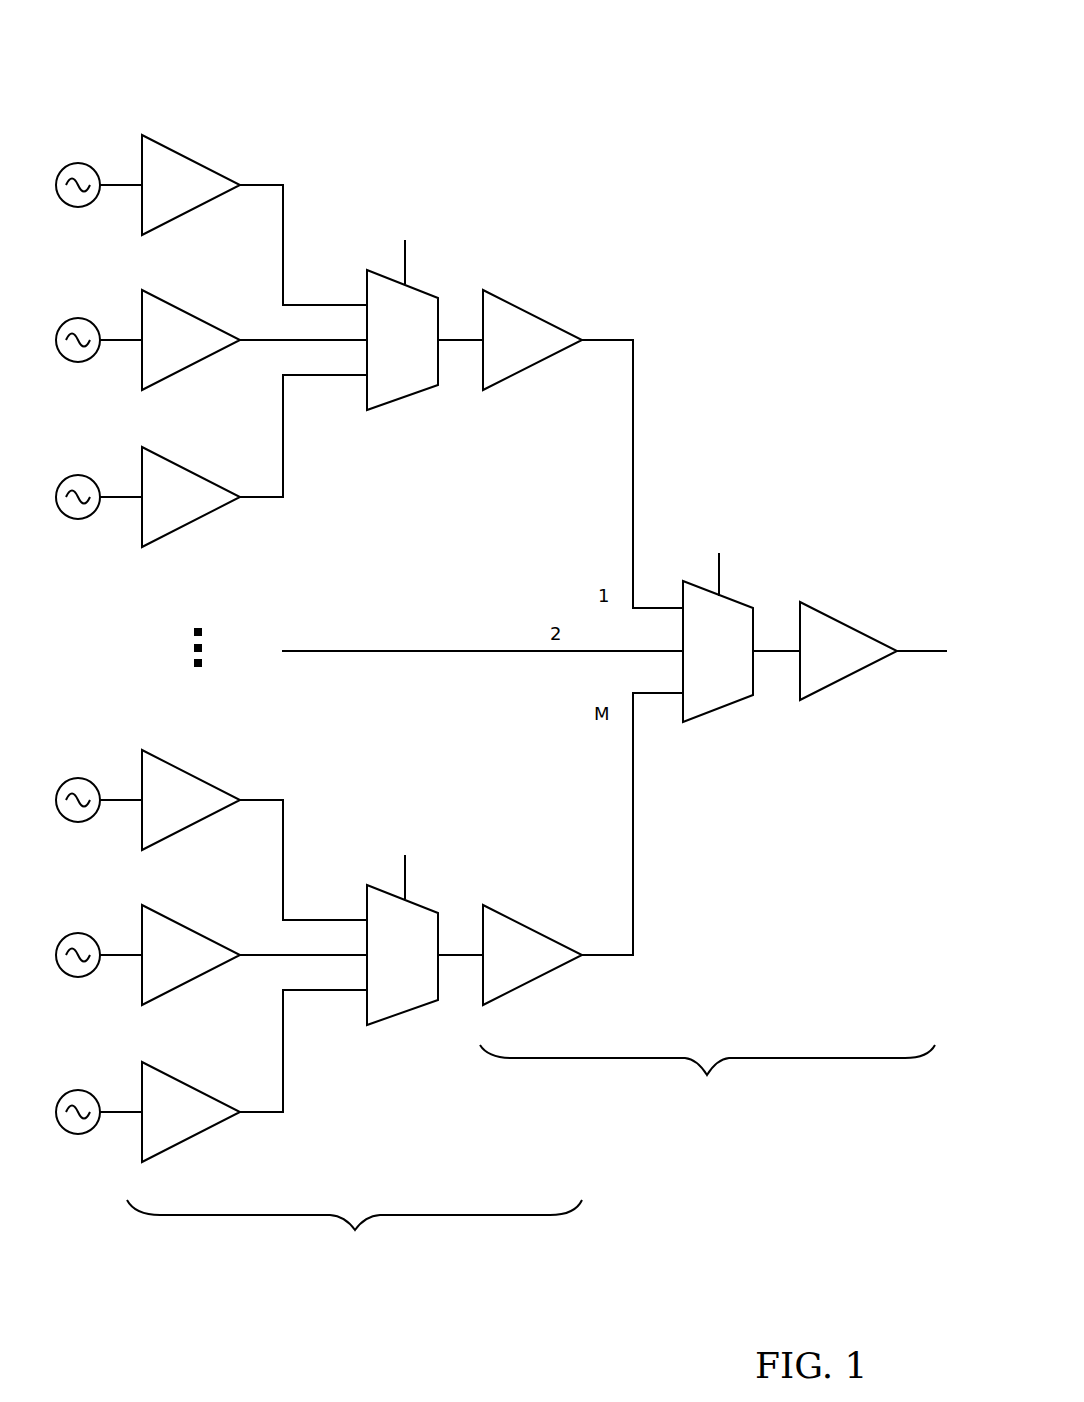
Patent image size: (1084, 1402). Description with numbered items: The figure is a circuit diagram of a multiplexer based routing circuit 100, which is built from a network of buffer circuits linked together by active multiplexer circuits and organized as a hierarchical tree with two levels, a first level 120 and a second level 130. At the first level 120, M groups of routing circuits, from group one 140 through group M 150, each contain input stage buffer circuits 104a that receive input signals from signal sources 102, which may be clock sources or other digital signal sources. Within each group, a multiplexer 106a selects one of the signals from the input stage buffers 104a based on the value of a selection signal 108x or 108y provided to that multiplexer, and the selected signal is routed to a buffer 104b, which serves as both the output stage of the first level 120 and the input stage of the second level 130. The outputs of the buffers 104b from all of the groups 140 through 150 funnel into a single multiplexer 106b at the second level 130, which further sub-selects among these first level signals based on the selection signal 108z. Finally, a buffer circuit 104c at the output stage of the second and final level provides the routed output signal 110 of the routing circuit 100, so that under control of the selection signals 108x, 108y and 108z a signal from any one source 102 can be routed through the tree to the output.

The multiplexer based routing circuit 100 is at (639, 22).
The signal source 102 is at (80, 122).
The buffer circuit 104a is at (198, 195).
The buffer 104b is at (542, 350).
The buffer circuit 104c is at (858, 661).
The multiplexer 106a is at (425, 350).
The multiplexer 106b is at (741, 661).
The selection signal 108x is at (420, 242).
The selection signal 108y is at (420, 857).
The selection signal 108z is at (738, 553).
The routed output signal 110 is at (928, 695).
The first level 120 is at (338, 1312).
The second level 130 is at (690, 1154).
The group of routing circuits 140 is at (365, 509).
The group of routing circuits 150 is at (351, 1126).